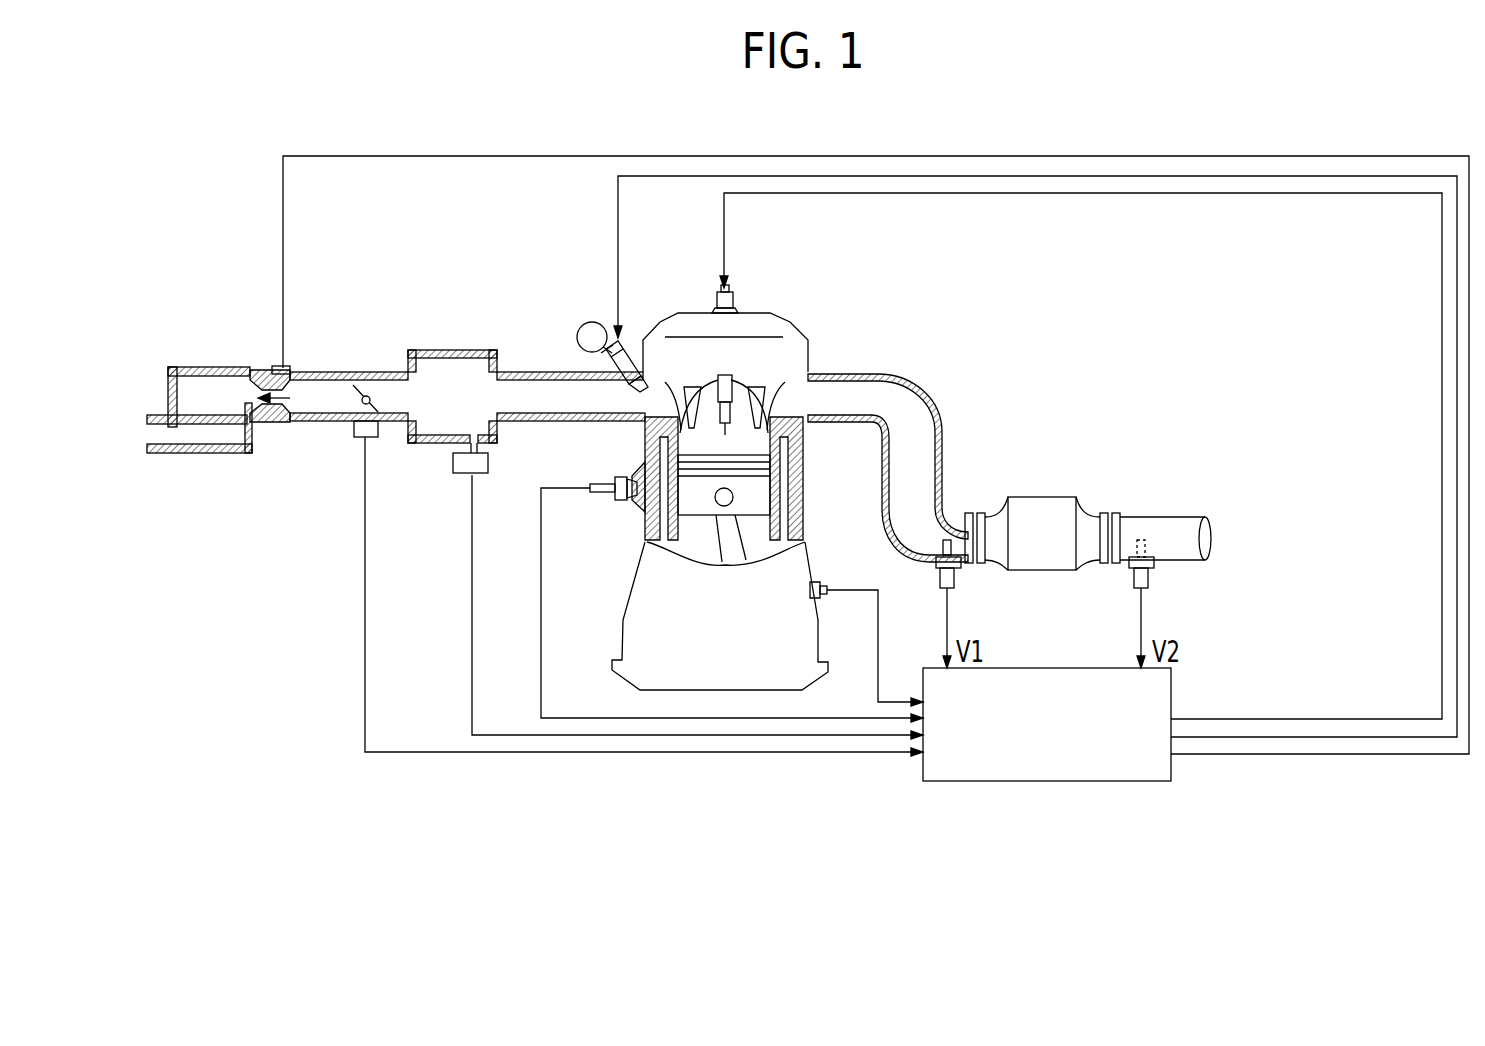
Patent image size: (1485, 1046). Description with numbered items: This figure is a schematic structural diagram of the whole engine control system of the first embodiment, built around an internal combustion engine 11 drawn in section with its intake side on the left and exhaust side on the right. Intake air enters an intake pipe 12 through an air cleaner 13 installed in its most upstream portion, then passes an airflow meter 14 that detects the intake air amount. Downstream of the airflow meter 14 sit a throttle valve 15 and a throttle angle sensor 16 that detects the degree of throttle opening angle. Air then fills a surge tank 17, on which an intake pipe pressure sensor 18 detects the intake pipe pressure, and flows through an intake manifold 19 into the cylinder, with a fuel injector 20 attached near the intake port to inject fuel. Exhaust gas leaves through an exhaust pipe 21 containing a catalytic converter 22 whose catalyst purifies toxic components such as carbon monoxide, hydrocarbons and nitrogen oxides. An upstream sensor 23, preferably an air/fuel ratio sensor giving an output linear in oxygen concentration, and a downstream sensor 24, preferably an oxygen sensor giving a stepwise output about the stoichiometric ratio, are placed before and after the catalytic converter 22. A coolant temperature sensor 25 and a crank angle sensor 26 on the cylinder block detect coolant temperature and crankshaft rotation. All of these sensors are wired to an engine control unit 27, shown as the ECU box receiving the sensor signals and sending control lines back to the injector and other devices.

The internal combustion engine 11 is at (790, 327).
The intake pipe 12 is at (313, 370).
The air cleaner 13 is at (236, 427).
The airflow meter 14 is at (273, 367).
The throttle valve 15 is at (371, 396).
The throttle angle sensor 16 is at (354, 438).
The surge tank 17 is at (450, 350).
The intake pipe pressure sensor 18 is at (453, 468).
The intake manifold 19 is at (557, 424).
The fuel injector 20 is at (583, 370).
The exhaust pipe 21 is at (877, 371).
The catalytic converter 22 is at (1040, 496).
The upstream sensor 23 is at (957, 585).
The downstream sensor 24 is at (1150, 586).
The coolant temperature sensor 25 is at (620, 503).
The crank angle sensor 26 is at (815, 582).
The engine control unit 27 is at (1147, 785).